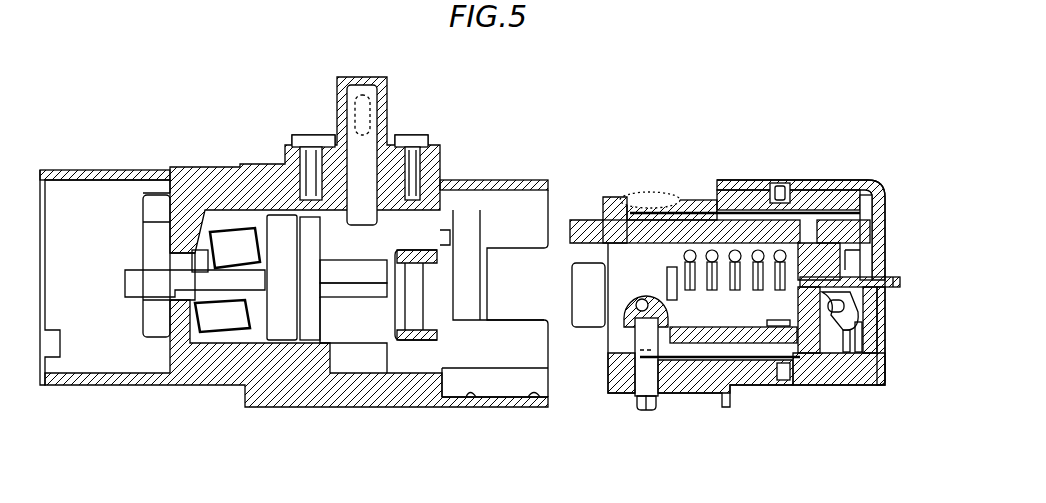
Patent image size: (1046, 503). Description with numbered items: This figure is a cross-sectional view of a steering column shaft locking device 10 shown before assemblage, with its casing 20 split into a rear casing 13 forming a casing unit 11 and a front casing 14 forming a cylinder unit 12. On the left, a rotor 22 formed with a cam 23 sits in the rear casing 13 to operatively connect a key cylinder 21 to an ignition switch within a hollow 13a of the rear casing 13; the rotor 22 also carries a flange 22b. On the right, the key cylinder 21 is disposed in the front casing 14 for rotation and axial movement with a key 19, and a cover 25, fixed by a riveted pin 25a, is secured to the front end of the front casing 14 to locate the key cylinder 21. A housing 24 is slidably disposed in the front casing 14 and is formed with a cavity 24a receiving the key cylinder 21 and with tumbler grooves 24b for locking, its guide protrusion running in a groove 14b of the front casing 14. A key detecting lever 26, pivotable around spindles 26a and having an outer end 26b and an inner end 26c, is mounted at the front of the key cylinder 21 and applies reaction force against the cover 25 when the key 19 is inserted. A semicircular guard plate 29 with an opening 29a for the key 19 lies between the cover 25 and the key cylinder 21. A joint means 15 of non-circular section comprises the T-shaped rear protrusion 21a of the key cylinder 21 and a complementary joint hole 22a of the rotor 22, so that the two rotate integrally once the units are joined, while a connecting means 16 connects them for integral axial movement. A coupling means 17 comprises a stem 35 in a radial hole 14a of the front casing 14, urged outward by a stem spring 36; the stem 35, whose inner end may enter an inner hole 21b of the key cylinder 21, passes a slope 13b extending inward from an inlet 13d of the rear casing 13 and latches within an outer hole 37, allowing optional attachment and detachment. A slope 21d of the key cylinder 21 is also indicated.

The steering column shaft locking device 10 is at (272, 103).
The casing unit 11 is at (230, 150).
The cylinder unit 12 is at (813, 160).
The rear casing 13 is at (245, 165).
The hollow 13a is at (58, 265).
The slope 13b is at (535, 400).
The inlet 13d is at (562, 185).
The front casing 14 is at (884, 370).
The hole 14a is at (612, 380).
The groove 14b is at (490, 400).
The joint means 15 is at (441, 238).
The connecting means 16 is at (587, 197).
The coupling means 17 is at (645, 425).
The key 19 is at (895, 283).
The casing 20 is at (520, 148).
The key cylinder 21 is at (742, 345).
The rear protrusion 21a is at (575, 270).
The inner hole 21b is at (640, 296).
The slope 21d is at (853, 178).
The rotor 22 is at (378, 315).
The joint hole 22a is at (430, 322).
The flange 22b is at (307, 335).
The cam 23 is at (277, 328).
The housing 24 is at (633, 193).
The cavity 24a is at (655, 232).
The tumbler grooves 24b is at (730, 200).
The cover 25 is at (870, 185).
The pin 25a is at (780, 183).
The key detecting lever 26 is at (840, 385).
The spindles 26a is at (822, 385).
The outer end 26b is at (875, 385).
The inner end 26c is at (800, 385).
The guard plate 29 is at (893, 290).
The opening 29a is at (882, 250).
The stem 35 is at (640, 395).
The stem spring 36 is at (605, 357).
The outer hole 37 is at (470, 405).